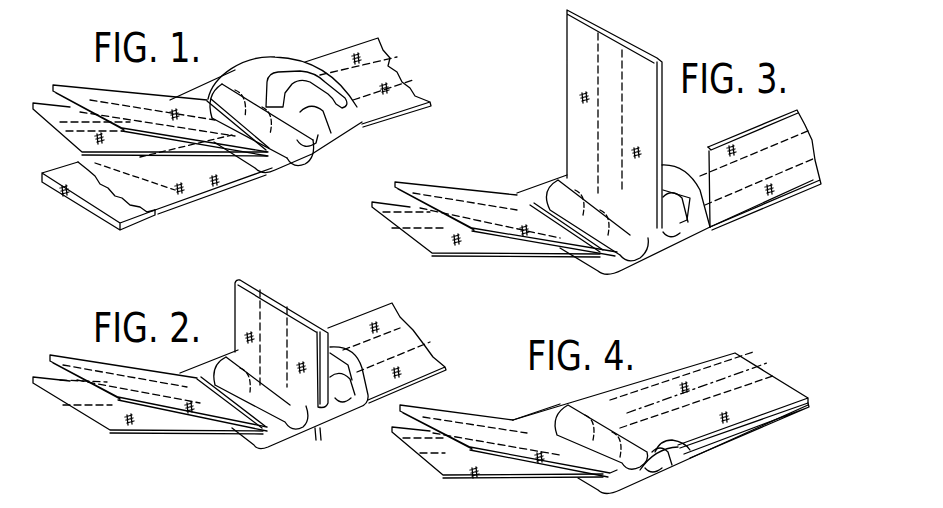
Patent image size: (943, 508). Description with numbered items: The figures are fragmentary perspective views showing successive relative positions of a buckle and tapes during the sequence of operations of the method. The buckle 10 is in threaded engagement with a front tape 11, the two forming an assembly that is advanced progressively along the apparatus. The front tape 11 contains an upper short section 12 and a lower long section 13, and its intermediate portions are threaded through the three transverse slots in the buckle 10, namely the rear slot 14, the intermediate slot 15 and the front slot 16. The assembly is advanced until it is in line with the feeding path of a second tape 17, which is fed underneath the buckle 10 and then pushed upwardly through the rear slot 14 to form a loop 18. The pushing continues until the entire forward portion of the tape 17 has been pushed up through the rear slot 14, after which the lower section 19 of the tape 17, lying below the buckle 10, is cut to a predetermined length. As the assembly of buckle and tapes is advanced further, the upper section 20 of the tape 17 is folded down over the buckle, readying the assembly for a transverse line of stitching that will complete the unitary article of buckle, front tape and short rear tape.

In FIG. 1, the buckle 10 is at (362, 127).
In FIG. 2, the buckle 10 is at (350, 404).
In FIG. 3, the buckle 10 is at (702, 225).
In FIG. 4, the buckle 10 is at (708, 438).
In FIG. 1, the front tape 11 is at (152, 142).
In FIG. 2, the front tape 11 is at (80, 422).
In FIG. 3, the front tape 11 is at (494, 215).
In FIG. 4, the front tape 11 is at (473, 408).
In FIG. 1, the upper short section 12 is at (69, 89).
In FIG. 3, the upper short section 12 is at (441, 189).
In FIG. 1, the lower long section 13 is at (214, 151).
In FIG. 3, the lower long section 13 is at (497, 243).
In FIG. 1, the rear slot 14 is at (328, 134).
In FIG. 3, the rear slot 14 is at (677, 238).
In FIG. 1, the intermediate slot 15 is at (300, 146).
In FIG. 3, the intermediate slot 15 is at (643, 244).
In FIG. 1, the front slot 16 is at (276, 163).
In FIG. 3, the front slot 16 is at (617, 264).
In FIG. 1, the tape 17 is at (401, 55).
In FIG. 2, the tape 17 is at (368, 313).
In FIG. 3, the tape 17 is at (742, 128).
In FIG. 4, the tape 17 is at (766, 363).
In FIG. 2, the loop 18 is at (234, 298).
In FIG. 3, the lower section 19 is at (708, 147).
In FIG. 4, the lower section 19 is at (753, 420).
In FIG. 3, the upper section 20 is at (570, 100).
In FIG. 4, the upper section 20 is at (708, 367).